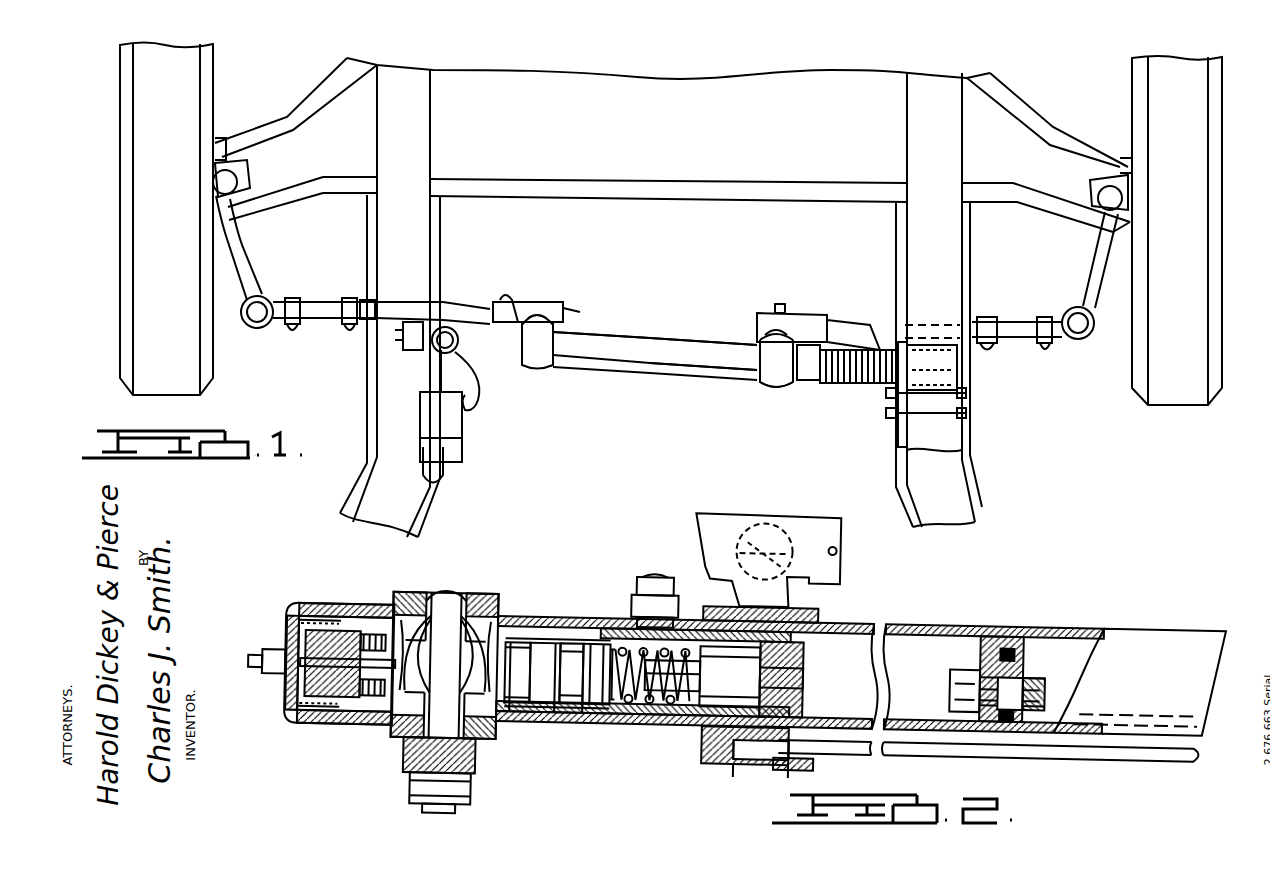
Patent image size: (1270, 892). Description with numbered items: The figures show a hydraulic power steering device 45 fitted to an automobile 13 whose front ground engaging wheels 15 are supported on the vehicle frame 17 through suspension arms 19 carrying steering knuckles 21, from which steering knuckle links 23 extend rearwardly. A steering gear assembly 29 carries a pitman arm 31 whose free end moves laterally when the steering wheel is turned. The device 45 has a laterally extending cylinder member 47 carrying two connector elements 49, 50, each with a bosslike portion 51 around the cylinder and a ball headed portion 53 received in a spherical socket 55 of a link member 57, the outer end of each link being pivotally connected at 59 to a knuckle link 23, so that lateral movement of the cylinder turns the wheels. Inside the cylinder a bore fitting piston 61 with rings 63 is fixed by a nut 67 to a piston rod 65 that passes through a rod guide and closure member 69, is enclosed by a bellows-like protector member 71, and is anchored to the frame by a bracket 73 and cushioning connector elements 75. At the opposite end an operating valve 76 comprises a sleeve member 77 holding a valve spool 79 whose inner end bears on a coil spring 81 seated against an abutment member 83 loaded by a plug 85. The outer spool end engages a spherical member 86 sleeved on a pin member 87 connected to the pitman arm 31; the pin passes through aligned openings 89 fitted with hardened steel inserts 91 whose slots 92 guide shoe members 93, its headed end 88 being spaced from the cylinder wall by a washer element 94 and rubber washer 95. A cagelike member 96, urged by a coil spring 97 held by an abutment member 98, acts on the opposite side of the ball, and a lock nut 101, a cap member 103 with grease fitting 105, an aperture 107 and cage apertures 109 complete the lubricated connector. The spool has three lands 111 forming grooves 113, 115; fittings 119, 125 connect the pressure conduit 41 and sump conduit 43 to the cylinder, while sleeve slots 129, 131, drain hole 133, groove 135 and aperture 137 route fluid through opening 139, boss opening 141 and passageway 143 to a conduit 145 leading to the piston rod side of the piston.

In FIG. 1, the automobile 13 is at (673, 297).
In FIG. 1, the front ground engaging wheels 15 is at (203, 385).
In FIG. 1, the vehicle frame 17 is at (968, 466).
In FIG. 1, the suspension arms 19 is at (307, 98).
In FIG. 1, the steering knuckle 21 is at (222, 183).
In FIG. 1, the steering knuckle links 23 is at (242, 264).
In FIG. 1, the steering gear assembly 29 is at (463, 430).
In FIG. 1, the steering or pitman arm 31 is at (478, 388).
In FIG. 2, the steering or pitman arm 31 is at (474, 790).
In FIG. 1, the pressure conduit 41 is at (568, 320).
In FIG. 1, the sump conduit 43 is at (512, 302).
In FIG. 2, the sump conduit 43 is at (655, 572).
In FIG. 1, the power steering device 45 is at (743, 387).
In FIG. 1, the cylinder member 47 is at (673, 333).
In FIG. 2, the cylinder member 47 is at (945, 614).
In FIG. 1, the connector element 49 is at (558, 378).
In FIG. 2, the connector element 49 is at (810, 604).
In FIG. 1, the connector element 50 is at (784, 408).
In FIG. 1, the bosslike portion 51 is at (768, 375).
In FIG. 2, the bosslike portion 51 is at (710, 740).
In FIG. 2, the ball headed portion 53 is at (778, 545).
In FIG. 2, the spherical socket 55 is at (765, 525).
In FIG. 1, the link member 57 is at (455, 302).
In FIG. 2, the link member 57 is at (708, 508).
In FIG. 1, the pivotal connection 59 is at (262, 327).
In FIG. 2, the bore fitting piston 61 is at (1040, 665).
In FIG. 2, the rings 63 is at (1005, 634).
In FIG. 2, the piston rod 65 is at (1070, 655).
In FIG. 2, the nut 67 is at (955, 660).
In FIG. 1, the rod guide and closure member 69 is at (805, 382).
In FIG. 1, the rubber bellows-like protector member 71 is at (850, 350).
In FIG. 1, the bracket 73 is at (922, 410).
In FIG. 1, the connector elements 75 is at (958, 384).
In FIG. 2, the operating valve 76 is at (548, 636).
In FIG. 2, the sleeve member 77 is at (480, 750).
In FIG. 2, the valve spool 79 is at (655, 700).
In FIG. 2, the coil spring 81 is at (655, 698).
In FIG. 2, the abutment member 83 is at (790, 655).
In FIG. 2, the plug 85 is at (795, 675).
In FIG. 2, the spherical or ball member 86 is at (532, 672).
In FIG. 2, the pin or stud member 87 is at (420, 592).
In FIG. 1, the headed end 88 is at (458, 340).
In FIG. 2, the openings 89 is at (405, 630).
In FIG. 2, the hardened steel inserts 91 is at (400, 593).
In FIG. 2, the elongated slot or opening 92 is at (432, 600).
In FIG. 2, the slide or shoe member 93 is at (405, 738).
In FIG. 1, the washer element 94 is at (430, 352).
In FIG. 2, the resilient or rubber washer 95 is at (490, 592).
In FIG. 2, the slidable cagelike member 96 is at (368, 700).
In FIG. 2, the coil spring 97 is at (362, 700).
In FIG. 2, the abutment member 98 is at (306, 680).
In FIG. 2, the lock nut 101 is at (318, 606).
In FIG. 2, the cap member 103 is at (296, 620).
In FIG. 2, the grease fitting 105 is at (262, 652).
In FIG. 2, the aperture 107 is at (320, 700).
In FIG. 2, the apertures 109 is at (445, 664).
In FIG. 2, the bore-fitting lands 111 is at (570, 640).
In FIG. 2, the circumferential groove 113 is at (585, 710).
In FIG. 2, the circumferential groove 115 is at (530, 710).
In FIG. 1, the fitting 119 is at (562, 336).
In FIG. 2, the fitting 125 is at (578, 640).
In FIG. 2, the slot 129 is at (596, 640).
In FIG. 2, the second slot 131 is at (512, 640).
In FIG. 2, the drain hole 133 is at (680, 624).
In FIG. 2, the longitudinally extending groove 135 is at (712, 700).
In FIG. 2, the aperture 137 is at (612, 700).
In FIG. 2, the opening 139 is at (785, 758).
In FIG. 2, the opening 141 is at (735, 758).
In FIG. 2, the laterally extending passageway 143 is at (782, 764).
In FIG. 2, the conduit 145 is at (870, 747).